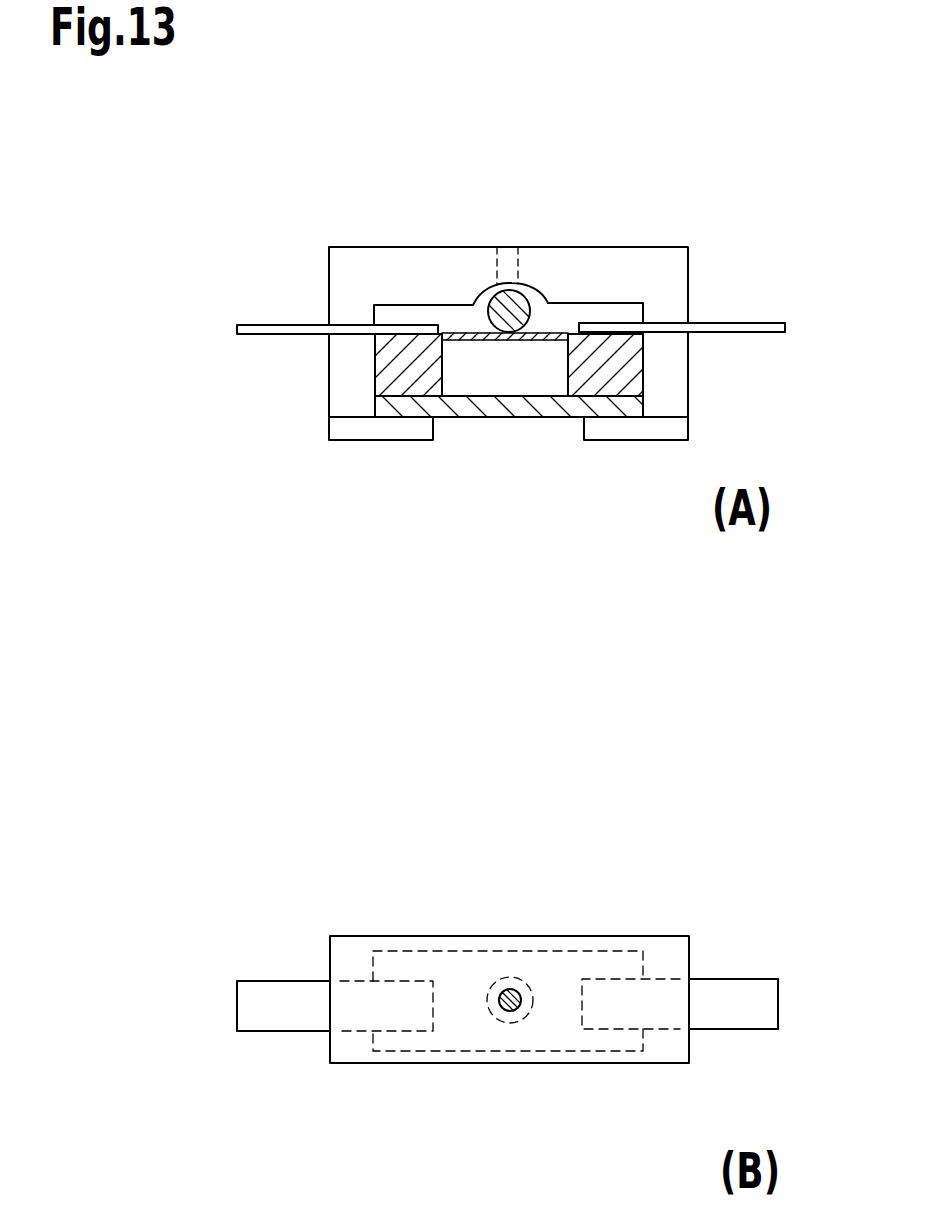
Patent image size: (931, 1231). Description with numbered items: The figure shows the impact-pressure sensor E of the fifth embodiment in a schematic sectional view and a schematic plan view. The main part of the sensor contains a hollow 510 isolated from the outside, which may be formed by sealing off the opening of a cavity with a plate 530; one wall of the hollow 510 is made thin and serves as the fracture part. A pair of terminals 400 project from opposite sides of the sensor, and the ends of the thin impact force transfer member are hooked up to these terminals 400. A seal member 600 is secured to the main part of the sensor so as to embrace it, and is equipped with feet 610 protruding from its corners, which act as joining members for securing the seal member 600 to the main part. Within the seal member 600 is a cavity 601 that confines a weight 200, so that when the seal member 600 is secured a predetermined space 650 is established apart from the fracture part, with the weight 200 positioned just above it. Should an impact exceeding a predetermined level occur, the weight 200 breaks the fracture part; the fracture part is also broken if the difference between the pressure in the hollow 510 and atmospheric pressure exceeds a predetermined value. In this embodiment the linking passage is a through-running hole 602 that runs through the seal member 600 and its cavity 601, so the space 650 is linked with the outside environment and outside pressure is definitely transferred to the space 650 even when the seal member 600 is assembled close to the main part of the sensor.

The weight 200 is at (488, 317).
The terminal 400 is at (259, 326).
The hollow 510 is at (463, 373).
The plate 530 is at (527, 413).
The seal member 600 is at (677, 262).
The cavity 601 is at (473, 302).
The through-running hole 602 is at (512, 250).
The feet 610 is at (345, 417).
The space 650 is at (603, 304).
The impact-pressure sensor E is at (705, 228).